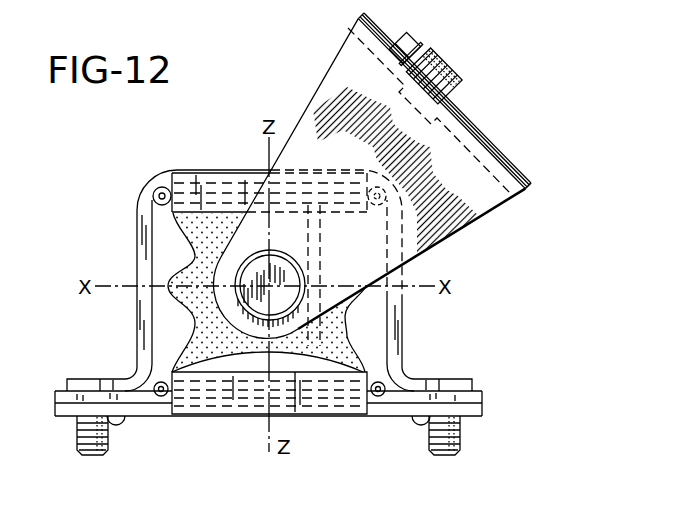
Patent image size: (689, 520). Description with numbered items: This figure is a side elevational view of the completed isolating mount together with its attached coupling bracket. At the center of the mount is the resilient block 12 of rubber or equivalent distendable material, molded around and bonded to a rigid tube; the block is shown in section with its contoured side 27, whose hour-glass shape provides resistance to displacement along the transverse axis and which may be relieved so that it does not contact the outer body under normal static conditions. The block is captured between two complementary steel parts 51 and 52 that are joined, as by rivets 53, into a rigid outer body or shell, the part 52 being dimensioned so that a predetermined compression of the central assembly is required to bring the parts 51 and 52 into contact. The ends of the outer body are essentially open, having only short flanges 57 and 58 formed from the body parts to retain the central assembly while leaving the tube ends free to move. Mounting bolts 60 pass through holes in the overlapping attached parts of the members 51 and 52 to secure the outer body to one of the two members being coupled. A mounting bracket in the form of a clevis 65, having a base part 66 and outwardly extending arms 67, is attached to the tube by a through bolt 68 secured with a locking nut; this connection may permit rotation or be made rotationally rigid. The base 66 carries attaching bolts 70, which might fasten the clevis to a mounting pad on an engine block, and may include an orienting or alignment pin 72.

The resilient block 12 is at (353, 342).
The side of the block 27 is at (175, 320).
The complementary part 51 is at (153, 417).
The complementary part 52 is at (136, 238).
The rivets 53 is at (122, 380).
The flange 57 is at (226, 416).
The flange 58 is at (229, 174).
The mounting bolts 60 is at (76, 434).
The clevis 65 is at (467, 231).
The base part 66 is at (489, 138).
The arms 67 is at (333, 62).
The through bolt 68 is at (297, 268).
The attaching bolts 70 is at (487, 55).
The alignment pin 72 is at (417, 38).